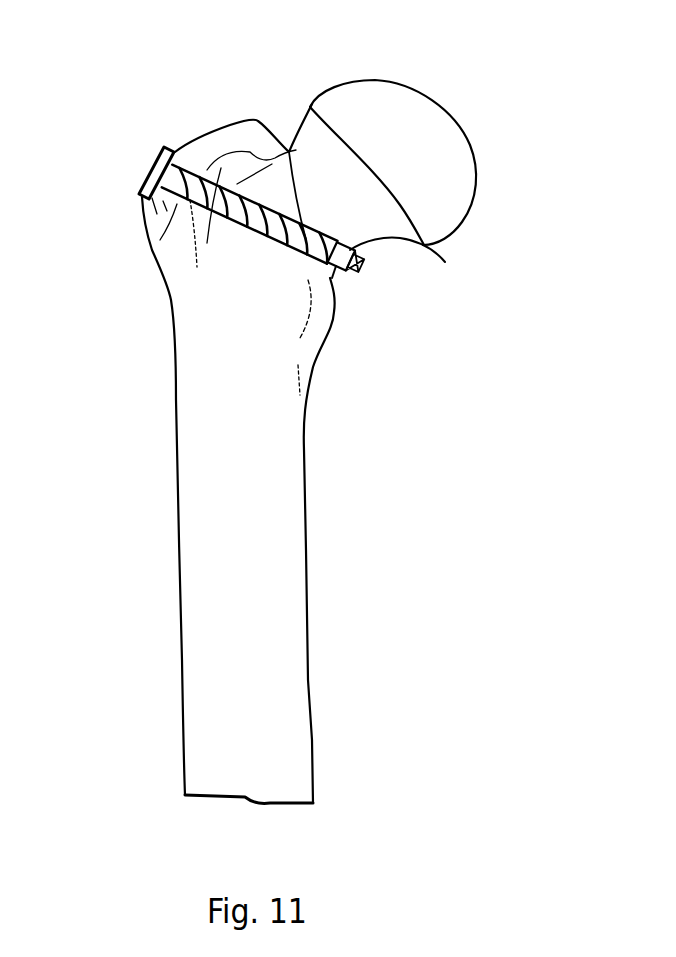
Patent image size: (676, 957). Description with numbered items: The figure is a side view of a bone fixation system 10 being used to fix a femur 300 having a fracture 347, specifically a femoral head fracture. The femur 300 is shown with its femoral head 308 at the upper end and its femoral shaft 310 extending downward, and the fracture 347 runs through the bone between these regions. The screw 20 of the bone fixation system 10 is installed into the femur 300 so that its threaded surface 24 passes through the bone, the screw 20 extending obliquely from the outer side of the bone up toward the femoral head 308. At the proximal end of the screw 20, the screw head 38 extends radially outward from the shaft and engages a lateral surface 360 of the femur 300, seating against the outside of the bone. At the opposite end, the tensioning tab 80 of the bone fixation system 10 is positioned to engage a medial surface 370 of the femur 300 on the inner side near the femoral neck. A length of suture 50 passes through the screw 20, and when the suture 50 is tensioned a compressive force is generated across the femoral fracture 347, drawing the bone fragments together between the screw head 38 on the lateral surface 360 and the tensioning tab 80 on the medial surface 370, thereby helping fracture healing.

The bone fixation system 10 is at (137, 158).
The screw 20 is at (279, 239).
The threaded surface 24 is at (180, 176).
The screw head 38 is at (165, 147).
The length of suture 50 is at (360, 280).
The tensioning tab 80 is at (343, 283).
The femur 300 is at (273, 505).
The femoral head 308 is at (455, 222).
The femoral shaft 310 is at (307, 537).
The fracture 347 is at (297, 208).
The lateral surface 360 is at (143, 203).
The medial surface 370 is at (445, 262).